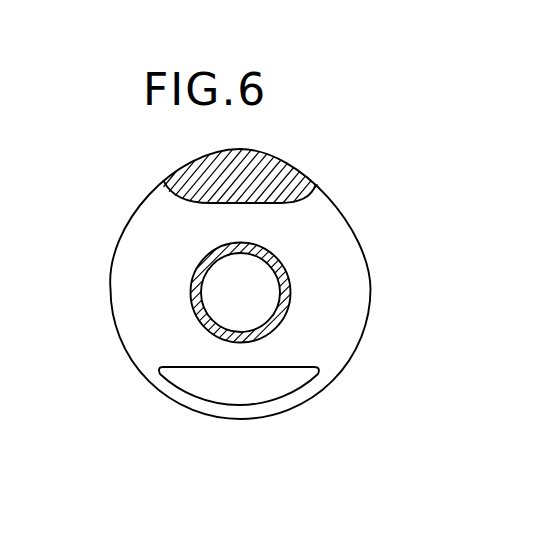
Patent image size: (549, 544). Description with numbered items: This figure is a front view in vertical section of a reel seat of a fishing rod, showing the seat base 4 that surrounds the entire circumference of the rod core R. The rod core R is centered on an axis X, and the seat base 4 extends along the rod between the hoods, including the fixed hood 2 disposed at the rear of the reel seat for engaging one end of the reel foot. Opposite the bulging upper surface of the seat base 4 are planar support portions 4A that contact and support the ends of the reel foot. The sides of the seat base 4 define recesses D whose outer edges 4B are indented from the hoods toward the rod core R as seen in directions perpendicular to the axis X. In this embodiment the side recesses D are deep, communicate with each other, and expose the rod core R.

The fixed hood 2 is at (185, 407).
The seat base 4 is at (287, 163).
The planar support portions 4A is at (267, 367).
The outer edges 4B is at (163, 183).
The recesses D is at (260, 222).
The rod core R is at (290, 302).
The axis X is at (240, 286).